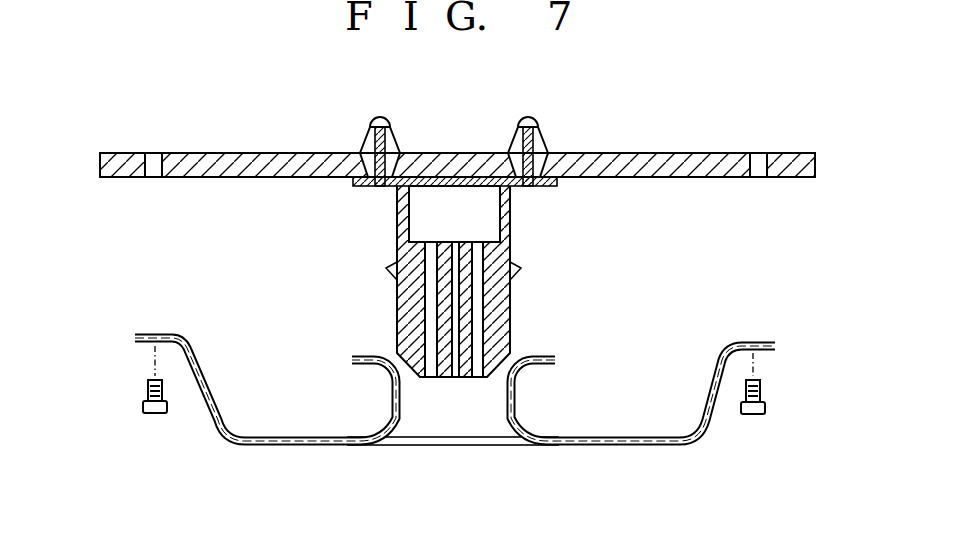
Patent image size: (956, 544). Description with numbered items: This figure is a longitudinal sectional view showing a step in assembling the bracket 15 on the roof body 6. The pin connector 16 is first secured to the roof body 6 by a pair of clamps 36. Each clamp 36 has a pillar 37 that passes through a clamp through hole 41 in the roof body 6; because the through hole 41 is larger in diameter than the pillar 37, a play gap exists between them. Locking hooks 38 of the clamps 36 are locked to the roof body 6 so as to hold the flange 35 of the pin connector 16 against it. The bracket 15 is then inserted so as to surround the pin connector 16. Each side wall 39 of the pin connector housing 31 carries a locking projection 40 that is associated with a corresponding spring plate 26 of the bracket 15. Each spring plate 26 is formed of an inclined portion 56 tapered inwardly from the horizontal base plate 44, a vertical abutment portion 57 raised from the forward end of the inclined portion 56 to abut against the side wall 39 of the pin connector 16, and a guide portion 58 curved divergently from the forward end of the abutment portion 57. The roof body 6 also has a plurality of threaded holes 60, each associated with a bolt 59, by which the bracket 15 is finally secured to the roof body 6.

The roof body 6 is at (685, 154).
The threaded hole 60 is at (758, 178).
The flange 35 is at (557, 184).
The clamp 36 is at (484, 119).
The pillar 37 is at (520, 140).
The locking hook 38 is at (545, 130).
The clamp through hole 41 is at (542, 142).
The side wall 39 is at (510, 215).
The locking projection 40 is at (520, 275).
The pin connector 16 is at (490, 281).
The pin connector housing 31 is at (497, 337).
The spring plate 26 is at (560, 359).
The vertical abutment portion 57 is at (516, 393).
The guide portion 58 is at (507, 378).
The horizontal base plate 44 is at (602, 437).
The bracket 15 is at (455, 402).
The inclined portion 56 is at (513, 446).
The bolt 59 is at (764, 407).